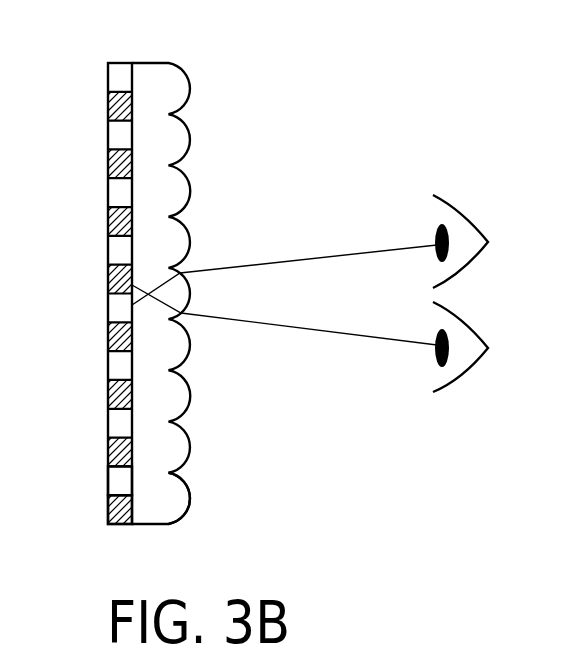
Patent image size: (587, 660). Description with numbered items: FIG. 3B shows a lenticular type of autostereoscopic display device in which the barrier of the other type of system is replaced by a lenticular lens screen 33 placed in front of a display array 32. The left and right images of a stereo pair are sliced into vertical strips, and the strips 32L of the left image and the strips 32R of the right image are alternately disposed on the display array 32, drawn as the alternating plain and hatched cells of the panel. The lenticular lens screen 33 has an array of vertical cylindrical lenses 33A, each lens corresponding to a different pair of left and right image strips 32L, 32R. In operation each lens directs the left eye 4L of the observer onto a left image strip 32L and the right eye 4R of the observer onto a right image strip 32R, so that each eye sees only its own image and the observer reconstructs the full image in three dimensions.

The display array 32 is at (91, 400).
The strips of the left image 32L is at (118, 482).
The strips of the right image 32R is at (118, 512).
The lenticular lens screen 33 is at (190, 398).
The vertical cylindrical lens 33A is at (174, 502).
The right eye 4R is at (470, 232).
The left eye 4L is at (470, 358).